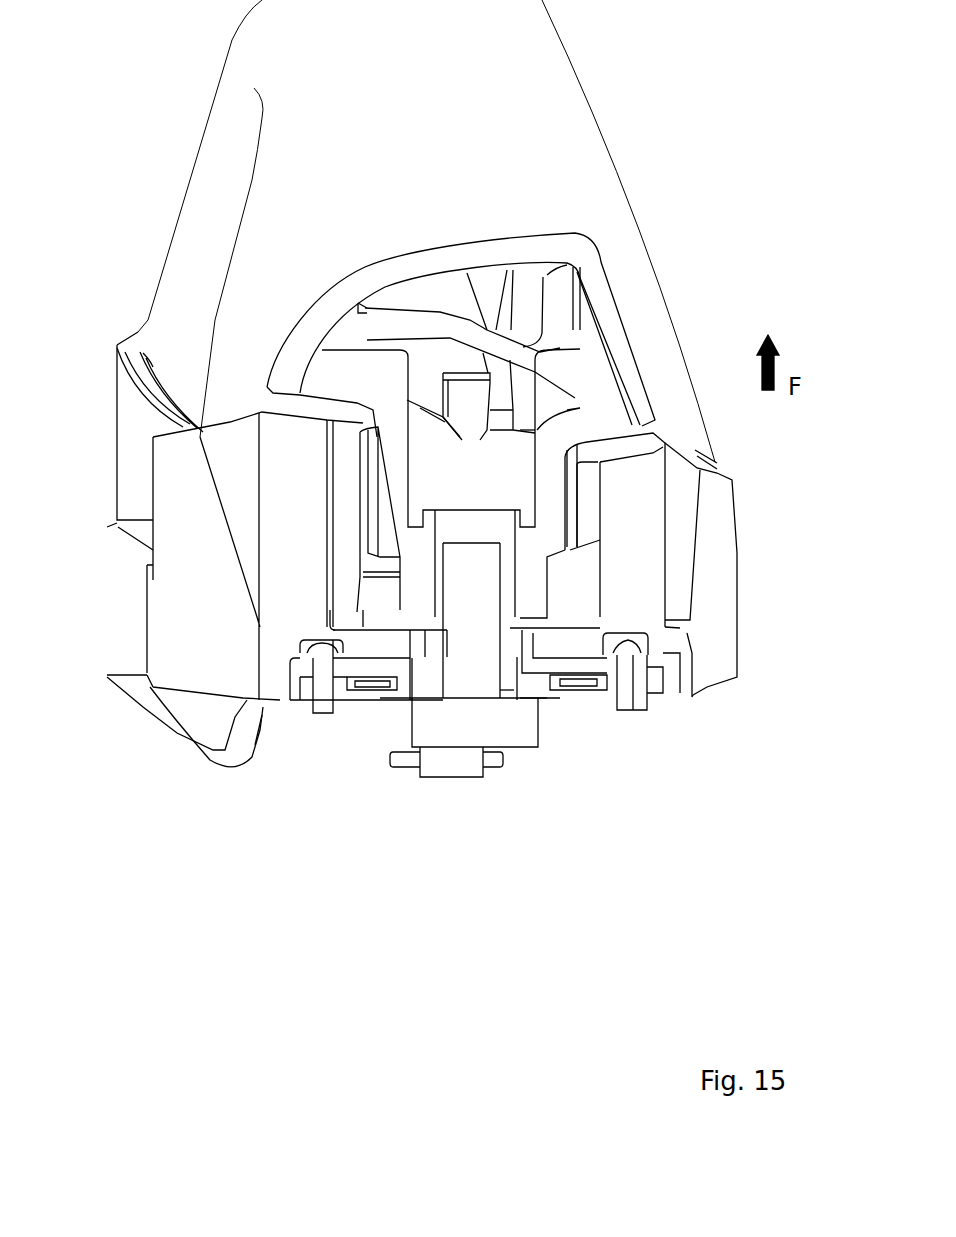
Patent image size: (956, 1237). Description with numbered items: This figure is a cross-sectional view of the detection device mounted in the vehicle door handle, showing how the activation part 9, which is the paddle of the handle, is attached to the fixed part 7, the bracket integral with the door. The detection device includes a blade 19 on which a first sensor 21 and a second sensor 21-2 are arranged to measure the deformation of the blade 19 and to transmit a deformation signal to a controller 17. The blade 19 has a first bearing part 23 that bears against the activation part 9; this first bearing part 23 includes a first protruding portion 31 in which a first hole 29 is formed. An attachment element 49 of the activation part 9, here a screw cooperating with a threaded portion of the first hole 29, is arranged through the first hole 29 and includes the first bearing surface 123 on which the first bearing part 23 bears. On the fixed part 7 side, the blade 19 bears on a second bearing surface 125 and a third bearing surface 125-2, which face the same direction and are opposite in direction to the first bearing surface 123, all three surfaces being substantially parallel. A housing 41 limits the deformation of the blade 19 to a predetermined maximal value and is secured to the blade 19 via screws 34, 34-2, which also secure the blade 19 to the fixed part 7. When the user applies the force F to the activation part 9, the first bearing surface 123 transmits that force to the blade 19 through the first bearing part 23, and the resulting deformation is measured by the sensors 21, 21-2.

The activation part 9 is at (658, 368).
The fixed part 7 is at (640, 537).
The second bearing surface 125 is at (640, 627).
The third bearing surface 125-2 is at (343, 657).
The housing 41 is at (657, 675).
The screw 34 is at (623, 690).
The screw 34-2 is at (322, 692).
The first sensor 21 is at (598, 682).
The second sensor 21-2 is at (345, 683).
The first hole 29 is at (443, 673).
The attachment element 49 is at (462, 712).
The first bearing part 23 is at (508, 684).
The first protruding portion 31 is at (517, 657).
The controller 17 is at (462, 767).
The first bearing surface 123 is at (527, 698).
The blade 19 is at (550, 693).